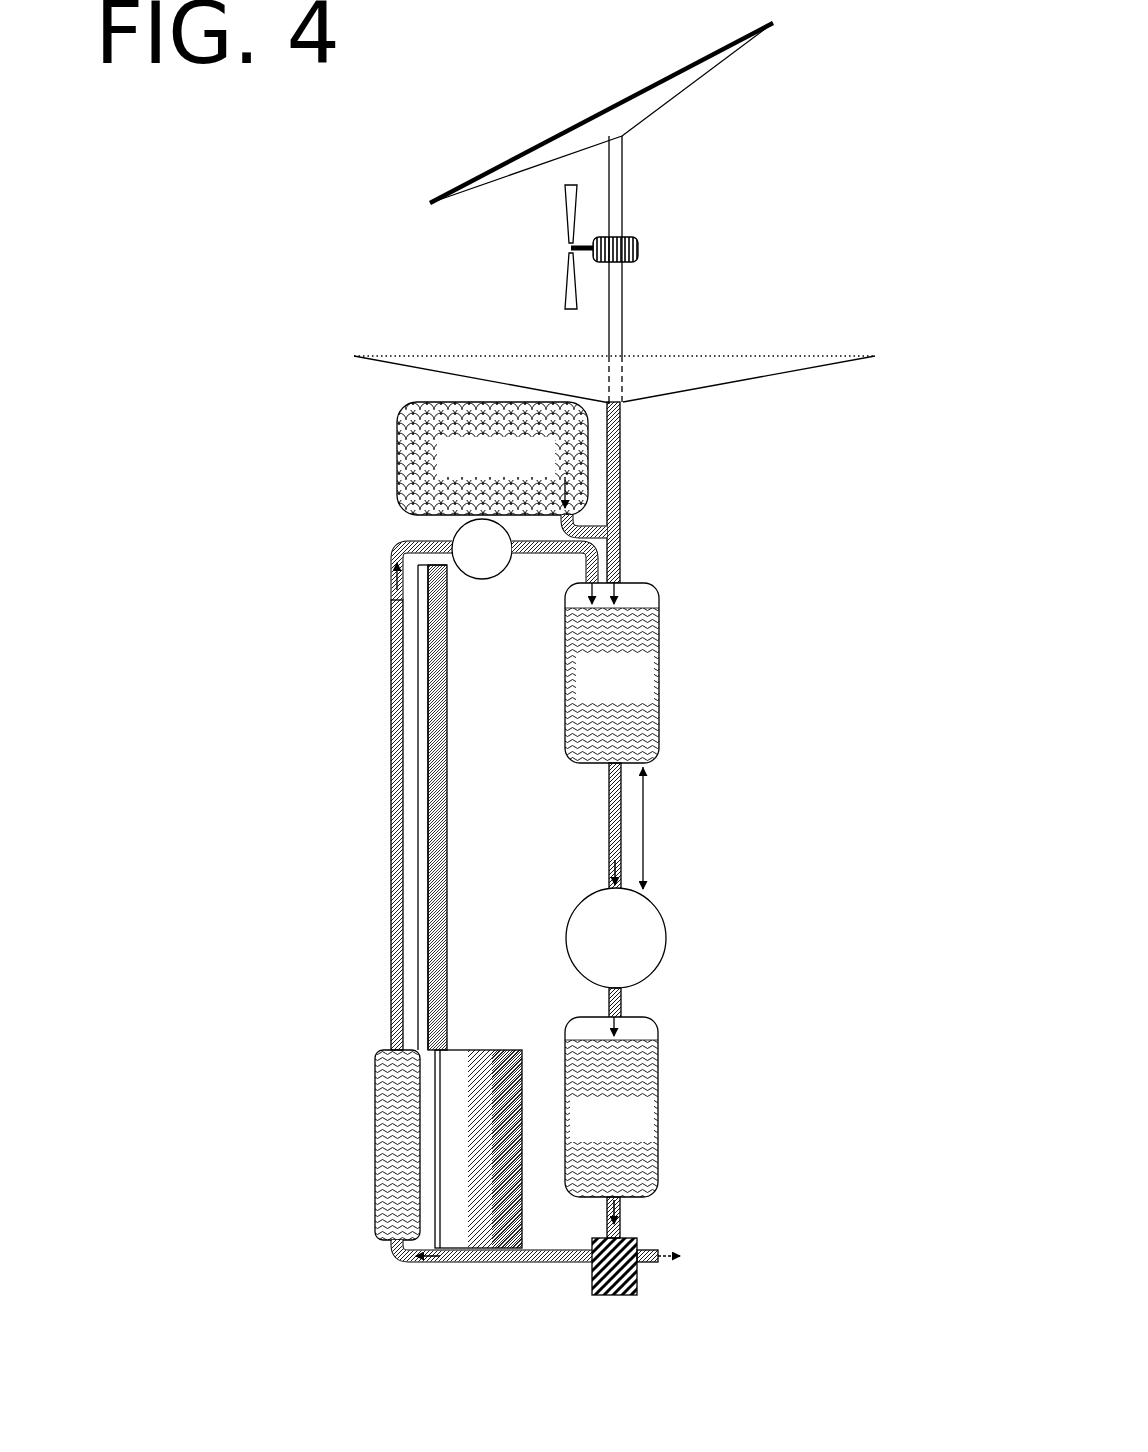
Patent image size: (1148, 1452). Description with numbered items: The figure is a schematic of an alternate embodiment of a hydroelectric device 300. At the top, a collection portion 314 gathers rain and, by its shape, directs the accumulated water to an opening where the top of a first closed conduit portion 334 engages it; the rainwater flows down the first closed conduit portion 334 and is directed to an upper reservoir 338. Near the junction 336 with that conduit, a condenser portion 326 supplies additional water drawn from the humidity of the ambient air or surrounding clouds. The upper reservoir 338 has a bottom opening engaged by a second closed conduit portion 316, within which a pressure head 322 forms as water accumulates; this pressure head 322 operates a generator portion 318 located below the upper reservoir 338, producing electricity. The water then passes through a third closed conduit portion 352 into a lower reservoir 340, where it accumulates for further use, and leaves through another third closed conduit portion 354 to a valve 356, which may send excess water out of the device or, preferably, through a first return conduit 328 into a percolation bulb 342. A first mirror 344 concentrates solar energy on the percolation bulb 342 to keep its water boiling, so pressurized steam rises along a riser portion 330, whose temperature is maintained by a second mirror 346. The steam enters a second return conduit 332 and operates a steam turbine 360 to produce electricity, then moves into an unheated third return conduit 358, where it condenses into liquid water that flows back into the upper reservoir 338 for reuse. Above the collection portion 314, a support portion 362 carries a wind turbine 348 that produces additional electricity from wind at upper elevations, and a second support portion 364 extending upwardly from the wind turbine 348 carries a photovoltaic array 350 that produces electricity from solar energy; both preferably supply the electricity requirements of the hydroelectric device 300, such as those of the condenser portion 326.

The hydroelectric device 300 is at (337, 260).
The collection portion 314 is at (686, 379).
The second closed conduit portion 316 is at (621, 808).
The generator portion 318 is at (616, 938).
The pressure head 322 is at (643, 826).
The condenser portion 326 is at (492, 458).
The first return conduit 328 is at (502, 1260).
The riser portion 330 is at (390, 818).
The second return conduit 332 is at (430, 543).
The first closed conduit portion 334 is at (620, 468).
The junction 336 is at (603, 530).
The upper reservoir 338 is at (612, 673).
The lower reservoir 340 is at (611, 1107).
The percolation bulb 342 is at (392, 1128).
The first mirror 344 is at (462, 1190).
The second mirror 346 is at (432, 943).
The wind turbine 348 is at (638, 245).
The photovoltaic array 350 is at (641, 108).
The third closed conduit portion 352 is at (621, 1003).
The third closed conduit portion 354 is at (620, 1217).
The valve 356 is at (598, 1277).
The third return conduit 358 is at (543, 550).
The steam turbine 360 is at (470, 552).
The support portion 362 is at (622, 301).
The second support portion 364 is at (622, 167).